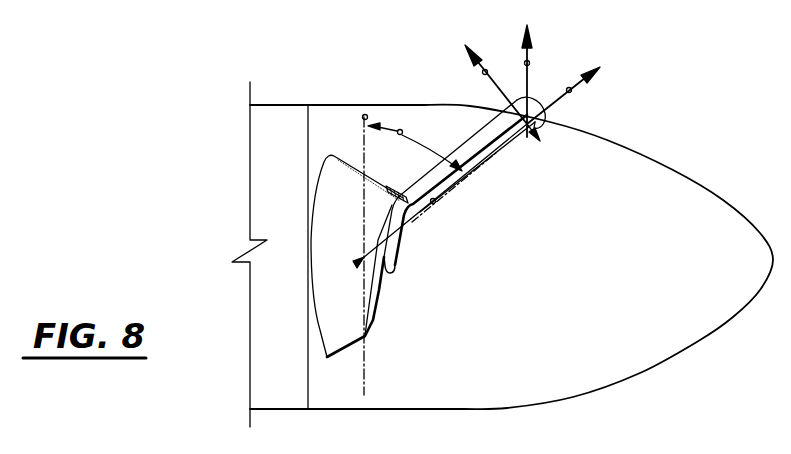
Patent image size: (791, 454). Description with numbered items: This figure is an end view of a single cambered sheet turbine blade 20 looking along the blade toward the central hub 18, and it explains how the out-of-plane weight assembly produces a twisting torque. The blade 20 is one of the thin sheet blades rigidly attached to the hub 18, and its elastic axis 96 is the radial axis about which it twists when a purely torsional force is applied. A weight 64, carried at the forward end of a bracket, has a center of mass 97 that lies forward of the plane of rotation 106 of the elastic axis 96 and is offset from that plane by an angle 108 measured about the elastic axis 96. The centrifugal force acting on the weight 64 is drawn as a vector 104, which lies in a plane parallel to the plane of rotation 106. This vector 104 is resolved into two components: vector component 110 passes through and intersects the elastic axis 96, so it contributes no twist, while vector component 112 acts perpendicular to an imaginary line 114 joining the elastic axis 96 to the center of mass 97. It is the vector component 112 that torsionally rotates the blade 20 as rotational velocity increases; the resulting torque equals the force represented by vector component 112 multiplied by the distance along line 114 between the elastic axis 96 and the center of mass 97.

The central hub 18 is at (700, 342).
The cambered sheet turbine blade 20 is at (350, 320).
The weight 64 is at (495, 142).
The elastic axis 96 is at (355, 265).
The center of mass 97 is at (539, 137).
The vector 104 is at (523, 63).
The plane of rotation 106 is at (367, 114).
The angle 108 is at (403, 130).
The vector component 110 is at (573, 91).
The vector component 112 is at (481, 72).
The imaginary line 114 is at (435, 203).